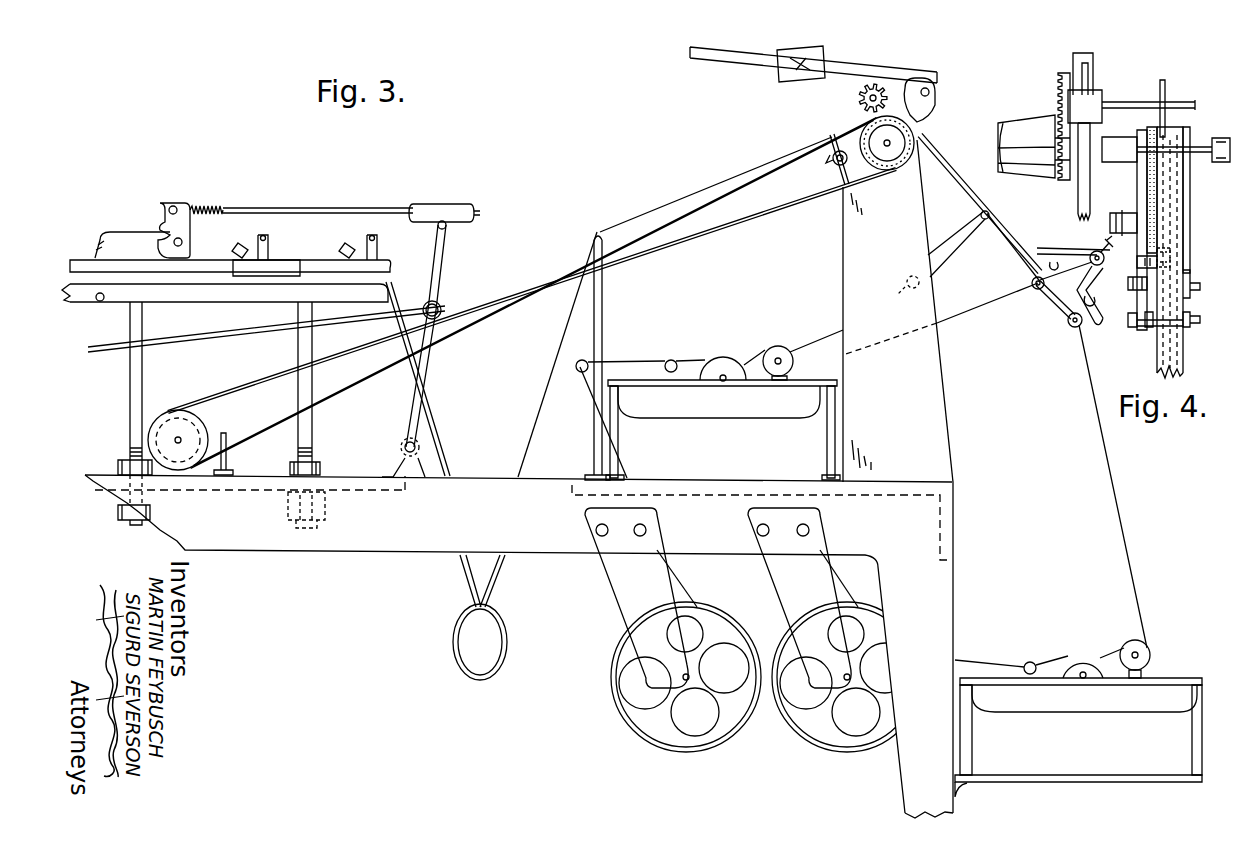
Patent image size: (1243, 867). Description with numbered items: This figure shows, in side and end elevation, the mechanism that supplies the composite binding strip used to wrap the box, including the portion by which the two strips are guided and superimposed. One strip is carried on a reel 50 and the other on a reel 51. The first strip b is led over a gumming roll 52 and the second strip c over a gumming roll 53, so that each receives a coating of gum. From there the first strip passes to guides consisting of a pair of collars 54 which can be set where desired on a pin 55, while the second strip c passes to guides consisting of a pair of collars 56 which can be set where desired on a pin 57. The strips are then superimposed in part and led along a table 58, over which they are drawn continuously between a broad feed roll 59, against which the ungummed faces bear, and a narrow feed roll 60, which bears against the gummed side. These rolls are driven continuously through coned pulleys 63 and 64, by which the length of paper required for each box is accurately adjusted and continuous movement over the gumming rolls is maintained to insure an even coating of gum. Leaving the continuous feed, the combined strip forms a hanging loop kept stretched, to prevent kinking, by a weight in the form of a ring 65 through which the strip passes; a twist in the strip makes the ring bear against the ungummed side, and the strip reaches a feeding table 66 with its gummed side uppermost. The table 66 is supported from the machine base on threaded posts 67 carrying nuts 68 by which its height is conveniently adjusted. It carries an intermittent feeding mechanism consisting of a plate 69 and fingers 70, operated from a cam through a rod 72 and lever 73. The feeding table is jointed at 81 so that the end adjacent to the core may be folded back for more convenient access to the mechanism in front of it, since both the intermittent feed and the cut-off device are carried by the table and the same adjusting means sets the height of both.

In FIG. 3, the reel 50 is at (640, 716).
In FIG. 3, the reel 51 is at (803, 716).
In FIG. 3, the gumming roll 52 is at (730, 362).
In FIG. 3, the gumming roll 53 is at (1082, 660).
In FIG. 3, the collars 54 is at (1089, 299).
In FIG. 4, the collars 54 is at (1168, 262).
In FIG. 3, the pin 55 is at (1031, 284).
In FIG. 4, the pin 55 is at (1197, 291).
In FIG. 4, the collars 56 is at (1148, 330).
In FIG. 3, the pin 57 is at (1068, 325).
In FIG. 4, the pin 57 is at (1191, 322).
In FIG. 3, the table 58 is at (967, 208).
In FIG. 4, the table 58 is at (1138, 196).
In FIG. 4, the broad feed roll 59 is at (1190, 133).
In FIG. 4, the narrow feed roll 60 is at (1166, 92).
In FIG. 3, the coned pulley 63 is at (175, 410).
In FIG. 3, the coned pulley 64 is at (862, 137).
In FIG. 4, the coned pulley 64 is at (1022, 128).
In FIG. 3, the ring 65 is at (508, 652).
In FIG. 3, the feeding table 66 is at (226, 281).
In FIG. 3, the posts 67 is at (130, 373).
In FIG. 3, the nuts 68 is at (120, 470).
In FIG. 3, the plate 69 is at (319, 230).
In FIG. 3, the fingers 70 is at (110, 255).
In FIG. 3, the rod 72 is at (232, 338).
In FIG. 3, the lever 73 is at (440, 264).
In FIG. 3, the joint 81 is at (98, 302).
In FIG. 3, the first strip b is at (646, 366).
In FIG. 4, the first strip b is at (1147, 133).
In FIG. 3, the second strip c is at (990, 668).
In FIG. 4, the second strip c is at (1172, 192).